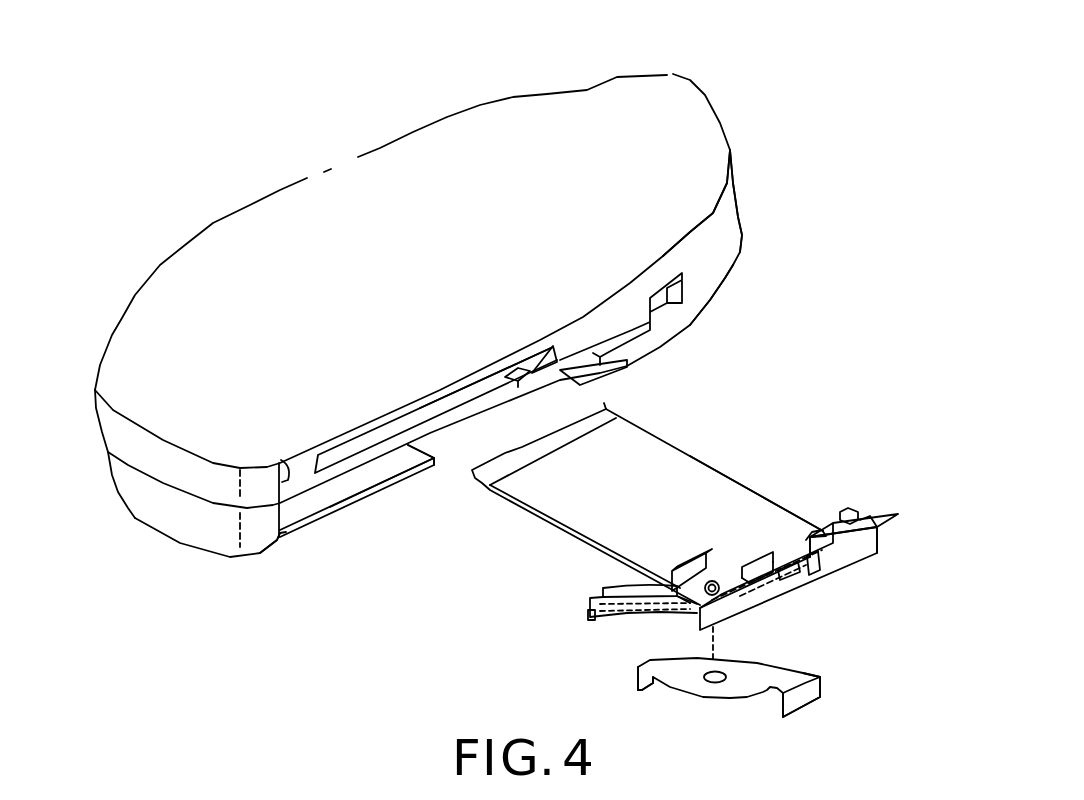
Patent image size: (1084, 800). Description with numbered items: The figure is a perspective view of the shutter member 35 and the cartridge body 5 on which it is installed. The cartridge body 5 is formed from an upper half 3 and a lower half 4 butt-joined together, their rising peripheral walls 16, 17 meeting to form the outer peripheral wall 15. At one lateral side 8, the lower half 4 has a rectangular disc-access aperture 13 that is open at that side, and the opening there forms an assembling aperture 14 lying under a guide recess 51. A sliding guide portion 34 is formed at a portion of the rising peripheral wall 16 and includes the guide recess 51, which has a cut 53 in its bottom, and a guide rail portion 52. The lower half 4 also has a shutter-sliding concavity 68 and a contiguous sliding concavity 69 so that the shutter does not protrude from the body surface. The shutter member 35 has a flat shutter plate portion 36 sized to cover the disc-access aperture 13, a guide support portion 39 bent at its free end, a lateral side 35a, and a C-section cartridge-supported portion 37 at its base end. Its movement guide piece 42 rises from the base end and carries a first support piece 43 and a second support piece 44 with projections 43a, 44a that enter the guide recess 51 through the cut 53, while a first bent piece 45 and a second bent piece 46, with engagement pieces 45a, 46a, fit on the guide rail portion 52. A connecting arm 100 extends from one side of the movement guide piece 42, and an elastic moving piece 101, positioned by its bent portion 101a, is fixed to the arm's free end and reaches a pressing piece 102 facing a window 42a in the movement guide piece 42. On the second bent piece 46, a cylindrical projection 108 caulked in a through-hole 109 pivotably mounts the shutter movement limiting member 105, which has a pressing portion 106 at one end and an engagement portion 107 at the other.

The connecting arm 100 is at (737, 47).
The cartridge body 5 is at (103, 553).
The upper half 3 is at (177, 470).
The lower half 4 is at (183, 527).
The shutter-sliding concavity 68 is at (283, 538).
The sliding concavity 69 is at (293, 457).
The outer peripheral wall 15 is at (806, 148).
The rising peripheral wall 16 is at (720, 193).
The rising peripheral wall 17 is at (730, 250).
The lateral side 8 is at (580, 338).
The sliding guide portion 34 is at (367, 447).
The guide recess 51 is at (477, 383).
The cut 53 is at (522, 367).
The guide rail portion 52 is at (342, 470).
The assembling aperture 14 is at (398, 462).
The disc-access aperture 13 is at (437, 452).
The shutter member 35 is at (677, 453).
The guide support portion 39 is at (607, 411).
The shutter plate portion 36 is at (717, 473).
The lateral side of shutter member 35a is at (553, 533).
The cartridge-supported portion 37 is at (828, 563).
The movement guide piece 42 is at (853, 547).
The window 42a is at (778, 575).
The pressing piece 102 is at (793, 583).
The projection 43a is at (810, 530).
The first support piece 43 is at (823, 530).
The first engagement piece 45a is at (848, 512).
The first bent piece 45 is at (867, 523).
The projection 44a is at (742, 563).
The second support piece 44 is at (757, 563).
The second bent piece 46 is at (714, 580).
The second engagement piece 46a is at (683, 563).
The elastic moving piece 101 is at (670, 616).
The bent portion 101a is at (592, 613).
The cylindrical projection 108 is at (689, 643).
The shutter movement limiting member 105 is at (730, 697).
The through-hole 109 is at (725, 675).
The engagement portion 107 is at (648, 680).
The pressing portion 106 is at (803, 698).